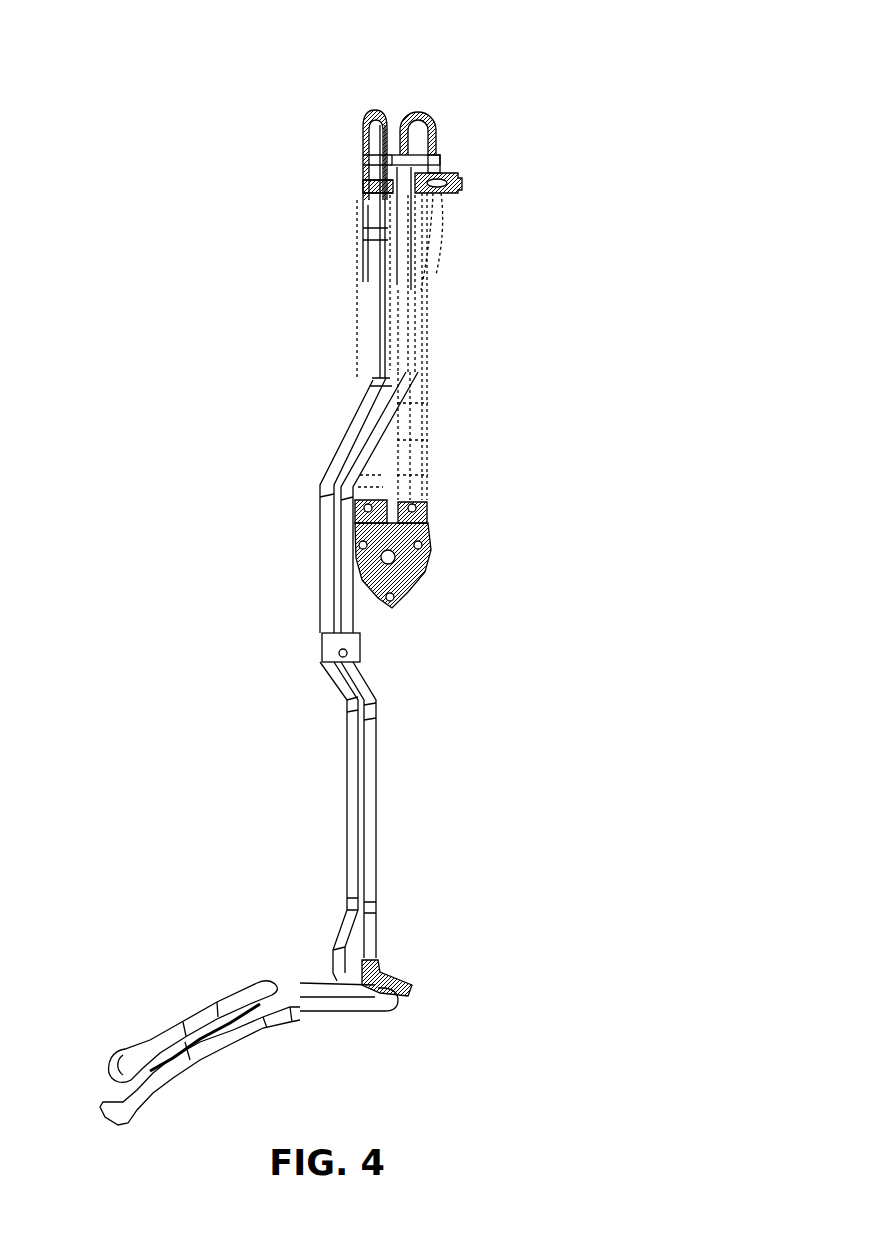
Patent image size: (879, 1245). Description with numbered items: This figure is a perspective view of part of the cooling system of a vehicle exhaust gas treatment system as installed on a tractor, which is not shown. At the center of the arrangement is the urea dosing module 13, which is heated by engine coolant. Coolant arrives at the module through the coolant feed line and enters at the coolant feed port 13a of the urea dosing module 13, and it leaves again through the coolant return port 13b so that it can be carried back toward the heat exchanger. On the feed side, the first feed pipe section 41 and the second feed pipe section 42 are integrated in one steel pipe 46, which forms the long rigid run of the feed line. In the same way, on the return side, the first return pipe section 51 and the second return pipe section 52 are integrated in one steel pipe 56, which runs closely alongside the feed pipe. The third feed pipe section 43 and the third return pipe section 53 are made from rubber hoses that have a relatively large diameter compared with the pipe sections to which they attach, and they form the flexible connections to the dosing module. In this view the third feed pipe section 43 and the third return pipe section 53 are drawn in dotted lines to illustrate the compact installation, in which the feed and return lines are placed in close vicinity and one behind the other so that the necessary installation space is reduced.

The urea dosing module 13 is at (430, 550).
The coolant feed port 13a is at (363, 517).
The coolant return port 13b is at (420, 507).
The first feed pipe section 41 is at (357, 691).
The second feed pipe section 42 is at (371, 110).
The third feed pipe section 43 is at (365, 312).
The steel pipe 46 is at (355, 765).
The first return pipe section 51 is at (373, 740).
The second return pipe section 52 is at (439, 128).
The third return pipe section 53 is at (430, 277).
The steel pipe 56 is at (372, 850).